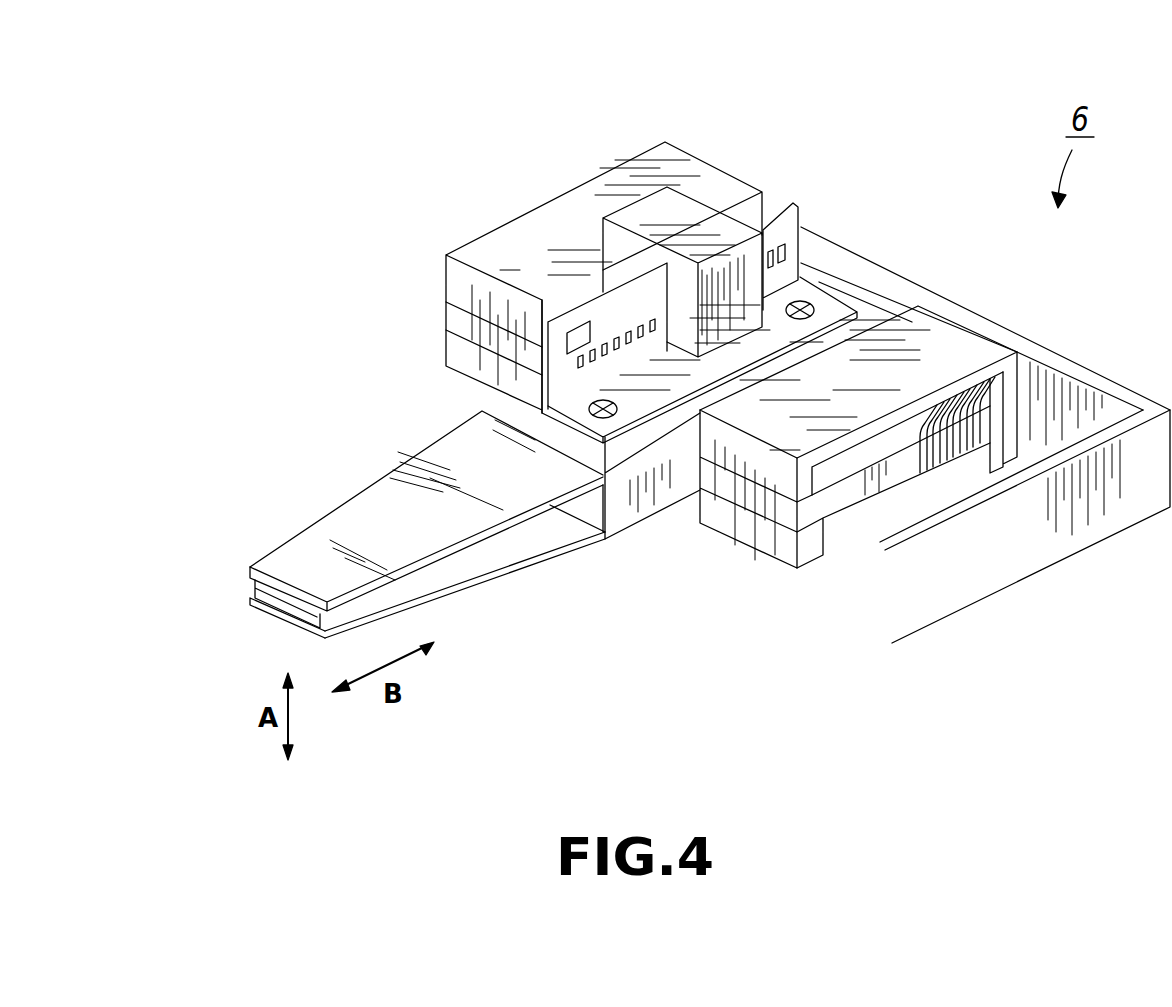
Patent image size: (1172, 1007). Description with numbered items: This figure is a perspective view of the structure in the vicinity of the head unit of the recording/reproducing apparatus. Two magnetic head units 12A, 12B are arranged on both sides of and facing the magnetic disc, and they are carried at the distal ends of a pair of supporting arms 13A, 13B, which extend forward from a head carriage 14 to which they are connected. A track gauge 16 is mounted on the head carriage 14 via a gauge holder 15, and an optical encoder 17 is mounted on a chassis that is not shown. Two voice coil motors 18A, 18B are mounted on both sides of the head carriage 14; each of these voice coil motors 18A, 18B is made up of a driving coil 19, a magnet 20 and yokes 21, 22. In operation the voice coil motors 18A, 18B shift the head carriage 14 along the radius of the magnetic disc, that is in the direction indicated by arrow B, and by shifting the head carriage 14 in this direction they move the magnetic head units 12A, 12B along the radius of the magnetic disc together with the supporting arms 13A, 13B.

The magnetic head unit 12A is at (255, 605).
The magnetic head unit 12B is at (267, 585).
The supporting arm 13A is at (460, 580).
The supporting arm 13B is at (327, 527).
The head carriage 14 is at (913, 283).
The gauge holder 15 is at (877, 303).
The track gauge 16 is at (793, 218).
The optical encoder 17 is at (693, 215).
The voice coil motor 18A is at (1010, 690).
The voice coil motor 18B is at (588, 205).
The driving coil 19 is at (938, 467).
The magnet 20 is at (840, 457).
The yoke 21 is at (547, 389).
The yoke 22 is at (568, 320).